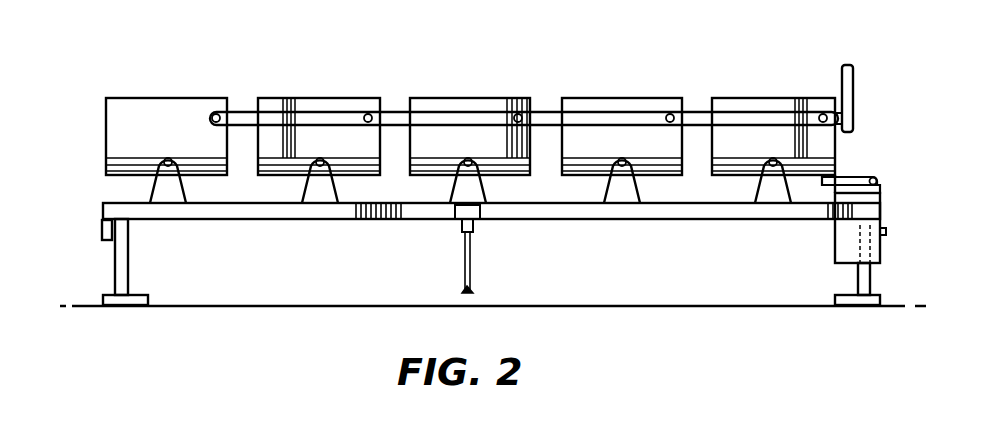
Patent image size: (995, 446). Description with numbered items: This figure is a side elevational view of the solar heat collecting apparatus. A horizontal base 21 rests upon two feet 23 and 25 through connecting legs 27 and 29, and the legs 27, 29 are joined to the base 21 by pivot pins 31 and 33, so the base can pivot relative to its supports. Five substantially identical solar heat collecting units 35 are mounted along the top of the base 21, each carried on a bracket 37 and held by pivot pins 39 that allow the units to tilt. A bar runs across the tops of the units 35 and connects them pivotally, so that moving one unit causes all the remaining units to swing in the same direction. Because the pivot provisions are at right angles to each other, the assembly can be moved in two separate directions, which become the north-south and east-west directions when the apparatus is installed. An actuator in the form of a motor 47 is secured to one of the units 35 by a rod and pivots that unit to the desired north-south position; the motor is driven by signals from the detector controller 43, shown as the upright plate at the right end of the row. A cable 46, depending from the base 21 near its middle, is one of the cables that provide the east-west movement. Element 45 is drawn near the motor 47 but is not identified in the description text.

The base 21 is at (522, 207).
The foot 23 is at (134, 297).
The foot 25 is at (836, 297).
The connecting leg 27 is at (115, 262).
The connecting leg 29 is at (873, 291).
The pivot pin 31 is at (102, 232).
The pivot pin 33 is at (886, 232).
The solar heat collecting unit 35 is at (185, 108).
The bracket 37 is at (168, 190).
The pivot pin 39 is at (169, 157).
The detector controller 43 is at (854, 80).
The arm 45 is at (852, 176).
The cable 46 is at (468, 290).
The motor 47 is at (880, 194).